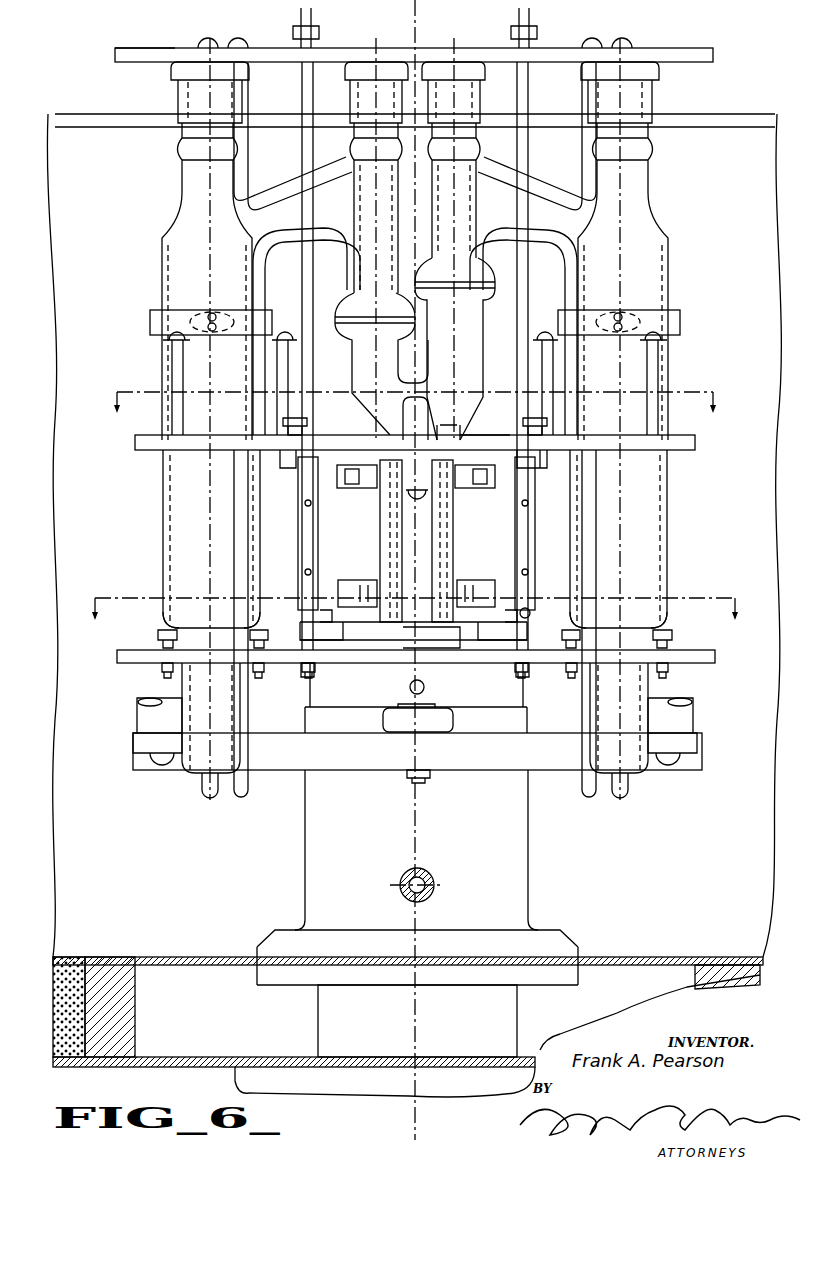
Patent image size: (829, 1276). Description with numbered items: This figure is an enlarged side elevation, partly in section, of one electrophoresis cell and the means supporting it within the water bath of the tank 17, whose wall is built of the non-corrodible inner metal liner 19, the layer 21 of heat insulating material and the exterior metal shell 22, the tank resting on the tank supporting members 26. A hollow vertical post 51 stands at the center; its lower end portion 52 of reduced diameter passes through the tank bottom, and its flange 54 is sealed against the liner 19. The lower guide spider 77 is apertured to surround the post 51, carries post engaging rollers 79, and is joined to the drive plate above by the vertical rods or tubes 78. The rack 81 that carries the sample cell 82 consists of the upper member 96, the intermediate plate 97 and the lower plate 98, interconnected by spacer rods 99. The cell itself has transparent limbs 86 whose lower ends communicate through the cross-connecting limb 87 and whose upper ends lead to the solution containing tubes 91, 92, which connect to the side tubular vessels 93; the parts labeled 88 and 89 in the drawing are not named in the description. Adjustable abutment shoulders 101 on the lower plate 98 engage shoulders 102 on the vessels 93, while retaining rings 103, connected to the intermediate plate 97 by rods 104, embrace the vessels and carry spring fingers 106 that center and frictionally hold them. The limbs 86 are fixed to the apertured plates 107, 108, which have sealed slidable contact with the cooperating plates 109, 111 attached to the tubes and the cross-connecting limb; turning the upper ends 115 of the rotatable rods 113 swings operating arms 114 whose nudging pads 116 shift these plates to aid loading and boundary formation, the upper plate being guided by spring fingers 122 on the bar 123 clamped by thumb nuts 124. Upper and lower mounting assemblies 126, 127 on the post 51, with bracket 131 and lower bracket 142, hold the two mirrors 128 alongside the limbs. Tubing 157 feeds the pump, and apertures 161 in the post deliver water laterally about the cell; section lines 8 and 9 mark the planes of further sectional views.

The section line 8- 8 is at (413, 392).
The section line 9- 9 is at (413, 599).
The water tank 17 is at (747, 866).
The inner metal liner 19 is at (690, 957).
The layer of heat insulating material 21 is at (53, 1018).
The exterior metal shell 22 is at (365, 1067).
The tank supporting members 26 is at (450, 1098).
The vertical post 51 is at (530, 861).
The lower end portion 52 is at (518, 1009).
The flange 54 is at (548, 930).
The lower guide spider 77 is at (341, 771).
The vertical rods or tubes 78 is at (137, 718).
The post engaging rollers 79 is at (452, 718).
The rack 81 is at (129, 48).
The sample cell 82 is at (163, 483).
The limbs 86 is at (388, 519).
The cross-connecting limb 87 is at (390, 648).
The slide block 88 is at (459, 622).
The nozzle 89 is at (395, 437).
The solution containing tube 91 is at (352, 356).
The solution containing tube 92 is at (480, 329).
The side tubular vessels 93 is at (162, 271).
The upper member 96 is at (715, 56).
The intermediate plate 97 is at (697, 441).
The lower plate 98 is at (716, 655).
The spacer rods 99 is at (250, 507).
The adjustable abutment shoulders 101 is at (157, 632).
The shoulders 102 is at (208, 627).
The retaining rings 103 is at (150, 319).
The rods 104 is at (172, 351).
The spring fingers 106 is at (204, 313).
The lower plate 107 is at (357, 640).
The upper plate 108 is at (478, 446).
The cooperating plate 109 is at (350, 640).
The cooperating plate 111 is at (448, 438).
The rotatable rods 113 is at (302, 273).
The operating arms 114 is at (299, 554).
The upper ends 115 is at (312, 17).
The nudging pads 116 is at (525, 454).
The guide members / spring fingers 122 is at (457, 648).
The bar 123 is at (284, 454).
The thumb nuts 124 is at (294, 419).
The upper mounting assembly 126 is at (345, 490).
The lower mounting assembly 127 is at (351, 580).
The mirrors 128 is at (378, 534).
The bracket 131 is at (463, 490).
The lower bracket 142 is at (465, 580).
The tubing 157 is at (427, 879).
The apertures 161 is at (425, 689).